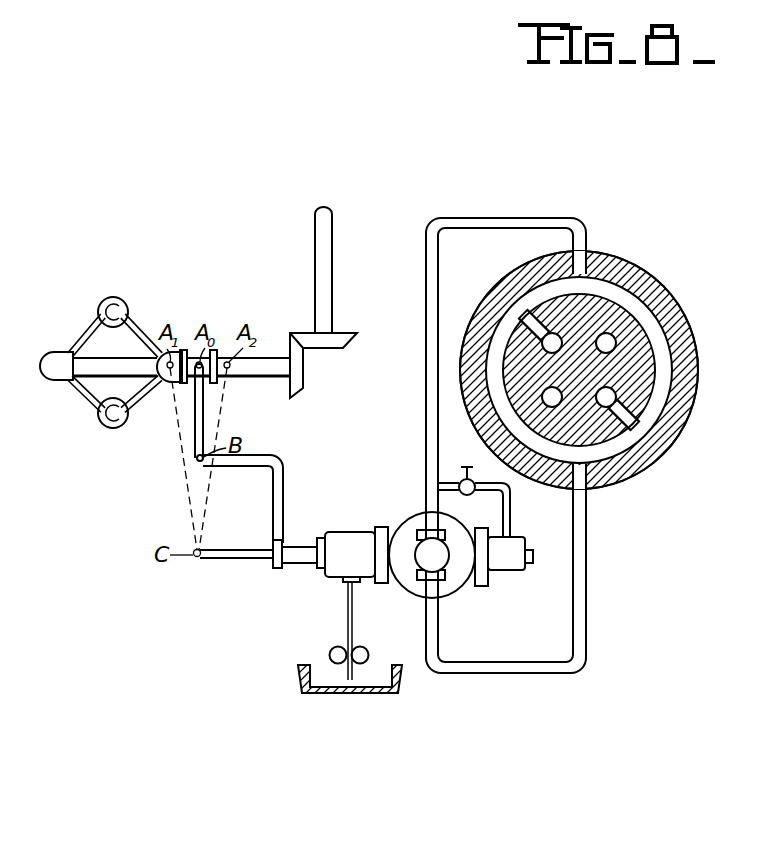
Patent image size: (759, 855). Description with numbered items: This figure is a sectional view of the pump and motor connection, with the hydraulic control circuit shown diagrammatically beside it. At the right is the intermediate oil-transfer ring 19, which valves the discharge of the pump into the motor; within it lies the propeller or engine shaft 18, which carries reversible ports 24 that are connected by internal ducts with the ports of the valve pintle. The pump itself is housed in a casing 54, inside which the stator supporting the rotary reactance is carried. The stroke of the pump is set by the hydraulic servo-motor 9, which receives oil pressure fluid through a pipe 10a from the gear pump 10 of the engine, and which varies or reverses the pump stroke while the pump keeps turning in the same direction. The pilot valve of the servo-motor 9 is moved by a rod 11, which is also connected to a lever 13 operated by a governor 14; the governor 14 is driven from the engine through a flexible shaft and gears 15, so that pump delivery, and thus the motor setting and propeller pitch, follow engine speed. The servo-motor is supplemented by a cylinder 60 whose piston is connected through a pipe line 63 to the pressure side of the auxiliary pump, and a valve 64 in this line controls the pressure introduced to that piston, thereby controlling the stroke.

The servo-motor 9 is at (350, 532).
The gear pump 10 is at (364, 659).
The pipe 10a is at (348, 601).
The rod 11 is at (262, 540).
The lever 13 is at (194, 444).
The governor 14 is at (86, 403).
The flexible shaft and gears 15 is at (290, 390).
The propeller or engine shaft 18 is at (637, 322).
The intermediate oil-transfer ring 19 is at (625, 262).
The reversible ports 24 is at (536, 326).
The casing 54 is at (452, 593).
The cylinder 60 is at (516, 571).
The pipe line 63 is at (513, 515).
The valve 64 is at (477, 463).